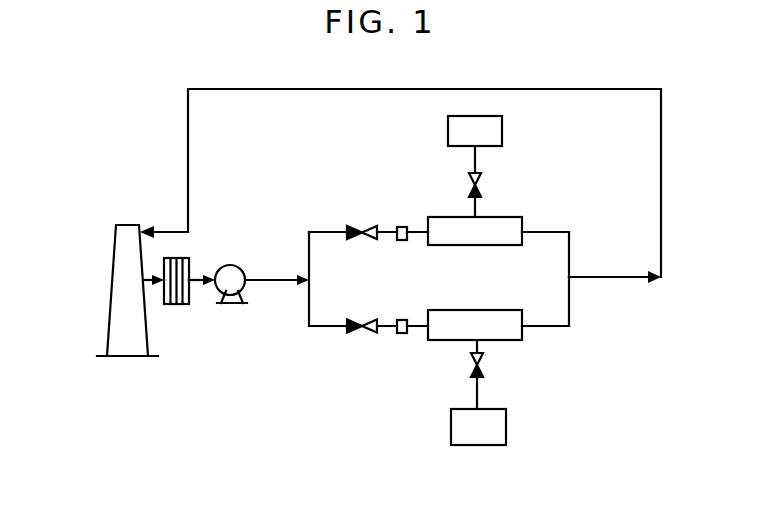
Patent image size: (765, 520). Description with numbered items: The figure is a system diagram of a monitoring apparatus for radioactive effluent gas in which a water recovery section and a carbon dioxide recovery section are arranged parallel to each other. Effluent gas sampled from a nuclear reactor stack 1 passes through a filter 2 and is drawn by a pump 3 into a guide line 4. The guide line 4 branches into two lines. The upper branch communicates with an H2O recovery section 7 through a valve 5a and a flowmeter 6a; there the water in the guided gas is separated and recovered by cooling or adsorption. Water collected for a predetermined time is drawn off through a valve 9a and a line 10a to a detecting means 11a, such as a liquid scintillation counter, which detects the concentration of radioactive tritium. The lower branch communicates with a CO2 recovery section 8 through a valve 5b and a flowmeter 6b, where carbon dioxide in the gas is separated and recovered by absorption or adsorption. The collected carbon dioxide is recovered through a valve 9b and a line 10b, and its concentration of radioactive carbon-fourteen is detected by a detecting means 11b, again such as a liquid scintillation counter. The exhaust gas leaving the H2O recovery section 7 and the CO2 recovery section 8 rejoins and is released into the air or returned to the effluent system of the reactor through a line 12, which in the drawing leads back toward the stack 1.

The nuclear reactor stack 1 is at (114, 249).
The filter 2 is at (187, 304).
The pump 3 is at (230, 265).
The guide line 4 is at (272, 282).
The valve 5a is at (361, 224).
The valve 5b is at (361, 320).
The flowmeter 6a is at (403, 225).
The flowmeter 6b is at (403, 320).
The H2O recovery section 7 is at (522, 220).
The CO2 recovery section 8 is at (522, 313).
The valve 9a is at (481, 187).
The valve 9b is at (483, 367).
The line 10a is at (472, 160).
The line 10b is at (476, 392).
The regeneration gas source 11a is at (502, 127).
The detecting means 11b is at (506, 433).
The line 12 is at (607, 279).